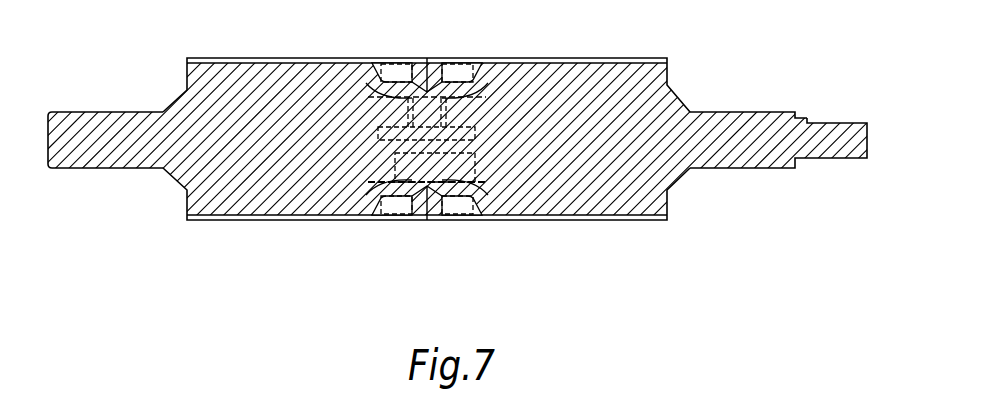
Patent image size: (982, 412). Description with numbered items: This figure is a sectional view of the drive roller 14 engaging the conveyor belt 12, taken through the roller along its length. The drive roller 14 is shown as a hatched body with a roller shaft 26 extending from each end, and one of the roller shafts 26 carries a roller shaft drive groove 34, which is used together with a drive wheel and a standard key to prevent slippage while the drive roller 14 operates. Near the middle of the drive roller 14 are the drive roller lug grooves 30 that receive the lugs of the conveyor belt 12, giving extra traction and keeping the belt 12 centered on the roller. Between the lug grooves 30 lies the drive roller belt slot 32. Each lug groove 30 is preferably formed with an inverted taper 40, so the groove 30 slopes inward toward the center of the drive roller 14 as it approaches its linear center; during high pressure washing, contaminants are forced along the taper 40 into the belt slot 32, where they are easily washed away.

The conveyor belt 12 is at (253, 58).
The drive roller 14 is at (583, 58).
The roller shaft 26 is at (108, 112).
The drive roller lug groove 30 is at (376, 63).
The drive roller belt slot 32 is at (427, 58).
The roller shaft drive groove 34 is at (820, 123).
The inverted taper 40 is at (391, 66).